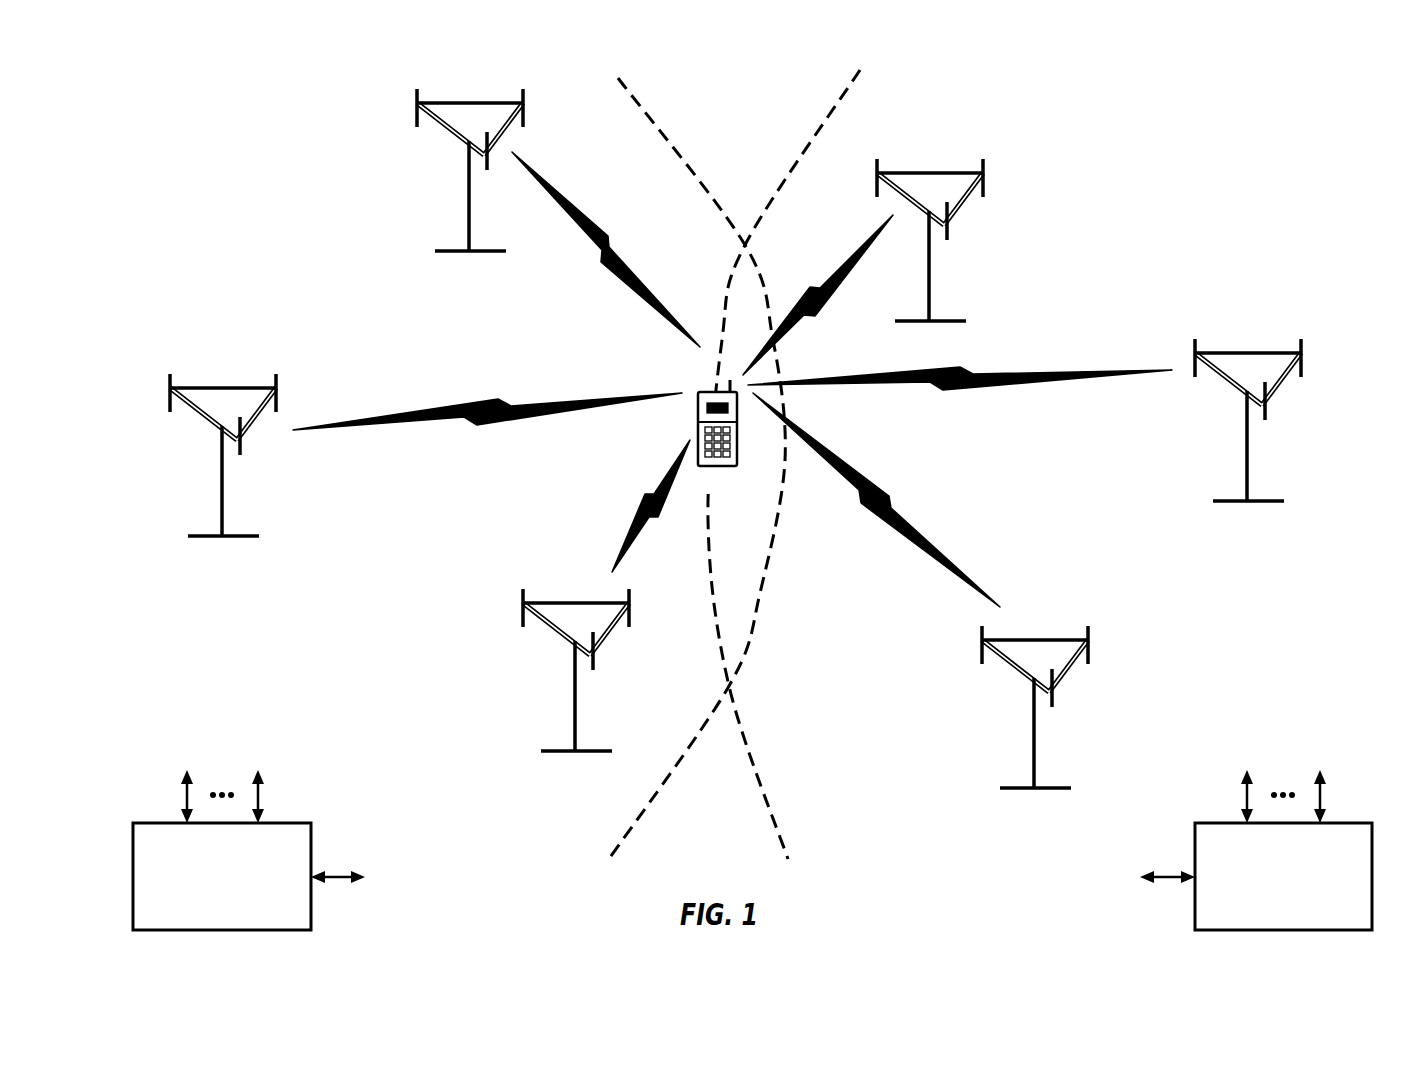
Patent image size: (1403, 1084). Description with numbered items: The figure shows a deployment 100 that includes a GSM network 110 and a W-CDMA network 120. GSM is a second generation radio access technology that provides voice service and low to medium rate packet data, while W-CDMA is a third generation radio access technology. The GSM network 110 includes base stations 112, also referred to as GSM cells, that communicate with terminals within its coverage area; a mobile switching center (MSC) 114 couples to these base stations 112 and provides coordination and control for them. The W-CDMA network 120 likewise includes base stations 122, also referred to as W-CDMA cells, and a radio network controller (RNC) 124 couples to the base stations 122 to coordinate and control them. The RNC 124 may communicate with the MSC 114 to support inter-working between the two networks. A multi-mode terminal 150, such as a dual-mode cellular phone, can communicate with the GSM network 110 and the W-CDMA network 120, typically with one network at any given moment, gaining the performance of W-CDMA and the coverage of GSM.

The deployment 100 is at (737, 66).
The GSM network 110 is at (1162, 236).
The base stations 112 is at (1089, 475).
The mobile switching center (MSC) 114 is at (1349, 821).
The W-CDMA network 120 is at (242, 236).
The base stations 122 is at (399, 421).
The radio network controller (RNC) 124 is at (288, 821).
The multi-mode terminal 150 is at (720, 392).